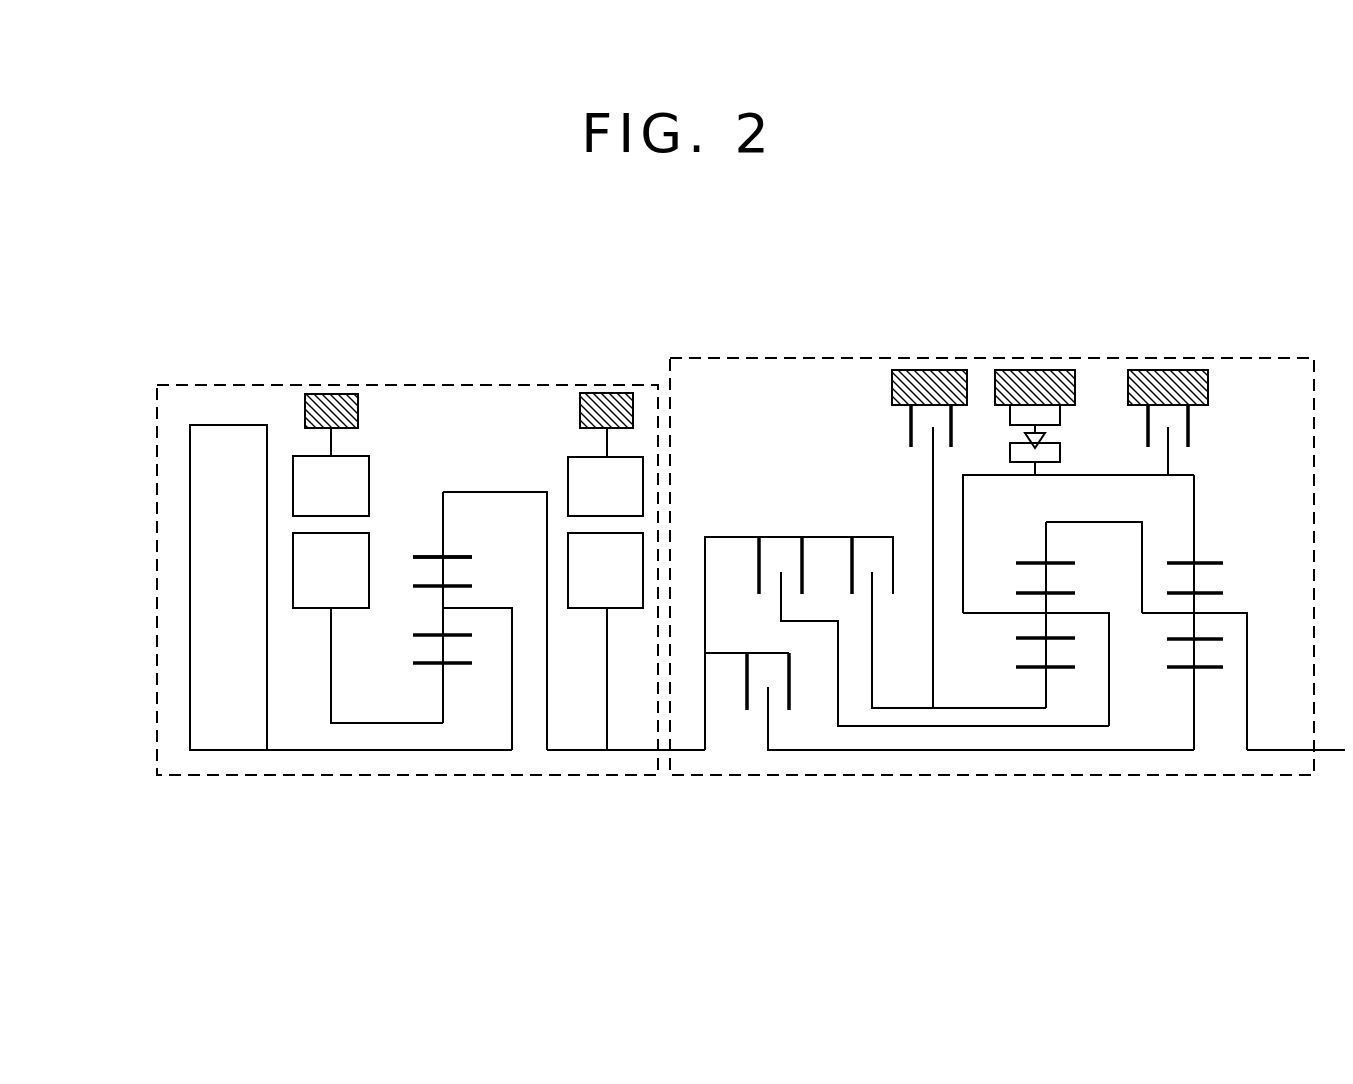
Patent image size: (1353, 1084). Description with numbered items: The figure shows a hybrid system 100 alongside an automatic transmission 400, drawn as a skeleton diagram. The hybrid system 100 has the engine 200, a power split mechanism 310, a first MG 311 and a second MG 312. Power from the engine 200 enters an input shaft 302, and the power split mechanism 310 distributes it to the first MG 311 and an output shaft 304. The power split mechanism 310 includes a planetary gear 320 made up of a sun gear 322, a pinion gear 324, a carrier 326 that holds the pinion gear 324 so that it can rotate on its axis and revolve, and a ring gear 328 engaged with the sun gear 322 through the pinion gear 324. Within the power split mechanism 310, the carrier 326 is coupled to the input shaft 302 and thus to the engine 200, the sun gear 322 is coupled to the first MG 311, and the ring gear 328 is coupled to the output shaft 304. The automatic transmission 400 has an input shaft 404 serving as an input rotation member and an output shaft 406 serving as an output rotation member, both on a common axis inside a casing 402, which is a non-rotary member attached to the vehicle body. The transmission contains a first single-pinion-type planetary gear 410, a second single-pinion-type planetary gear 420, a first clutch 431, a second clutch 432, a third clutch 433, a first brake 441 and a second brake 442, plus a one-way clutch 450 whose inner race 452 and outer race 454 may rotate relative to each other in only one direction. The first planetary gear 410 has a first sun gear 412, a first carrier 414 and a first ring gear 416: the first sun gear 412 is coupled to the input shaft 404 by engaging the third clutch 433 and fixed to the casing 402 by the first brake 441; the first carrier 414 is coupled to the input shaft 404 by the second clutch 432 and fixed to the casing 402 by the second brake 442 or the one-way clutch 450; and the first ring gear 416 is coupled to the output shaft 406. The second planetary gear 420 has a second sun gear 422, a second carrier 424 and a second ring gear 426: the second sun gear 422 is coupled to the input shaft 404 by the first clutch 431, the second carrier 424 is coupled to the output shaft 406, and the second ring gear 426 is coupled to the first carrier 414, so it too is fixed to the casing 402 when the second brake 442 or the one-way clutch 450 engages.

The hybrid system 100 is at (318, 385).
The engine 200 is at (225, 750).
The input shaft 302 is at (302, 750).
The output shaft 304 is at (627, 750).
The power split mechanism 310 is at (392, 758).
The first MG 311 is at (379, 478).
The second MG 312 is at (548, 467).
The planetary gear 320 is at (400, 585).
The sun gear 322 is at (413, 663).
The pinion gear 324 is at (440, 607).
The carrier 326 is at (462, 608).
The ring gear 328 is at (447, 560).
The automatic transmission 400 is at (1003, 775).
The casing 402 is at (932, 370).
The input shaft 404 is at (688, 750).
The output shaft 406 is at (1285, 752).
The first single-pinion-type planetary gear 410 is at (1064, 661).
The sun gear (S1) 412 is at (1084, 693).
The carrier (CA1) 414 is at (1028, 616).
The ring gear (R1) 416 is at (1043, 565).
The second single-pinion-type planetary gear 420 is at (1211, 669).
The sun gear (S2) 422 is at (1216, 700).
The carrier (CA2) 424 is at (1228, 605).
The ring gear (R2) 426 is at (1213, 572).
The C1 clutch 431 is at (789, 683).
The C2 clutch 432 is at (759, 552).
The C3 clutch 433 is at (852, 552).
The B1 brake 441 is at (950, 440).
The B2 brake 442 is at (1190, 444).
The one-way clutch (F) 450 is at (1129, 351).
The inner race 452 is at (1062, 452).
The outer race 454 is at (1062, 410).